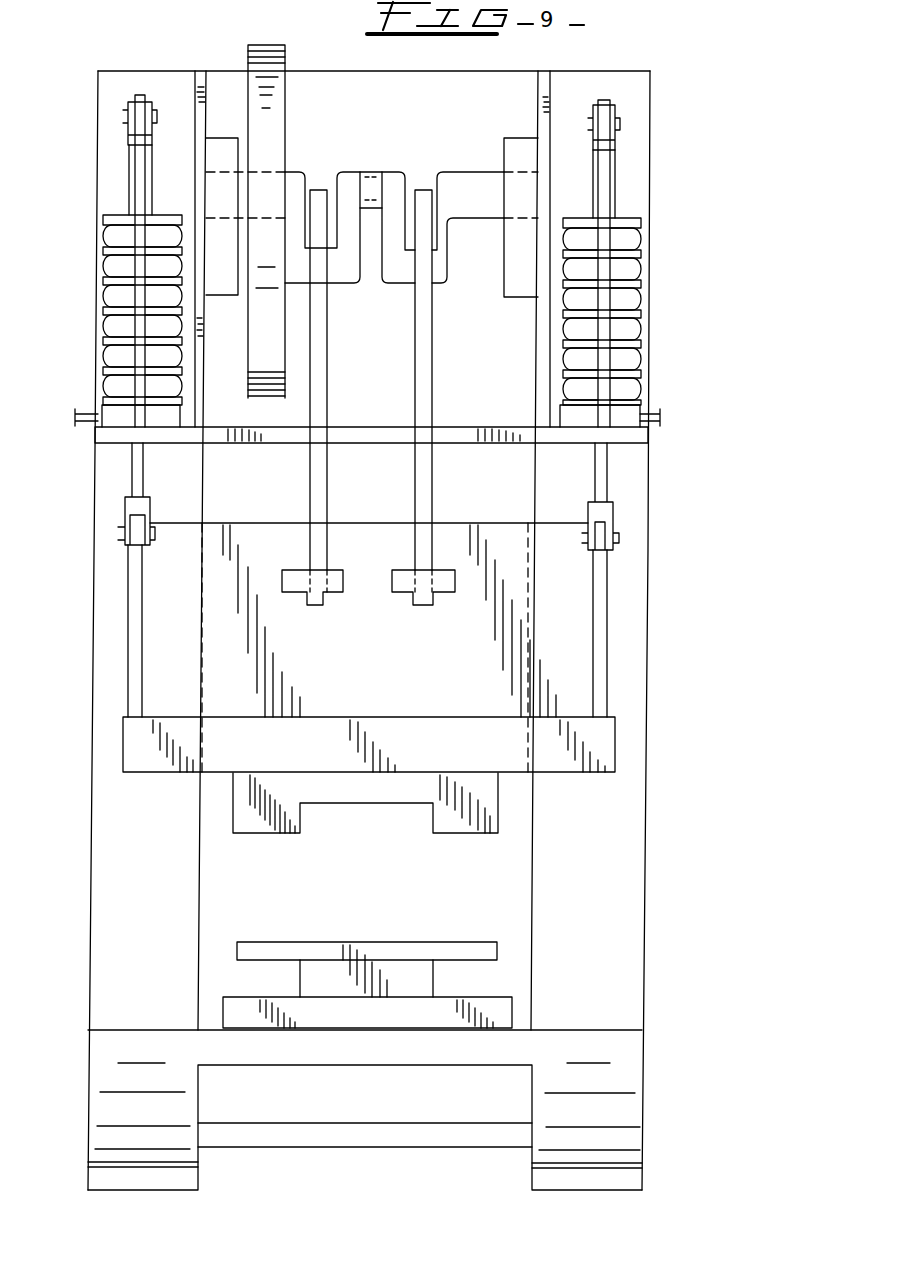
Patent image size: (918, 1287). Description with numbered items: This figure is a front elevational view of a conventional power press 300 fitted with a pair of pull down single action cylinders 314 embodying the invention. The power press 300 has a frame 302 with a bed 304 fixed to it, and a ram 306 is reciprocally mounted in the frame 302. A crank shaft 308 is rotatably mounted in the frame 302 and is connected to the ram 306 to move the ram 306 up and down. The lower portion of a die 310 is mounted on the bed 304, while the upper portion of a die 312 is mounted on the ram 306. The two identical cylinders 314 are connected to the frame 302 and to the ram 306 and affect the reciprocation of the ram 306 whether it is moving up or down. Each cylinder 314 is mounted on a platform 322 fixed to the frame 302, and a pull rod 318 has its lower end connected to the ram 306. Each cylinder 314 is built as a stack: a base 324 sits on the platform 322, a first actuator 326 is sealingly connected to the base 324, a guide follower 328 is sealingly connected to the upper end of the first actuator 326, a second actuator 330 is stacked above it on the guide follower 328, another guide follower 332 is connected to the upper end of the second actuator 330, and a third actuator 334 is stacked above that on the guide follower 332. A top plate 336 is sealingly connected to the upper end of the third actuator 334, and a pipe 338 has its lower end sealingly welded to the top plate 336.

The power press 300 is at (652, 80).
The frame 302 is at (622, 654).
The bed 304 is at (500, 1018).
The ram 306 is at (447, 660).
The crank shaft 308 is at (470, 188).
The lower portion of a die 310 is at (445, 955).
The upper portion of a die 312 is at (455, 825).
The pull down single action cylinder 314 is at (100, 322).
The pull rod 318 is at (137, 160).
The platform 322 is at (622, 437).
The base 324 is at (110, 428).
The first actuator 326 is at (103, 379).
The guide follower 328 is at (103, 346).
The second actuator 330 is at (103, 311).
The guide follower 332 is at (103, 284).
The third actuator 334 is at (103, 252).
The top plate 336 is at (103, 218).
The pipe 338 is at (130, 178).